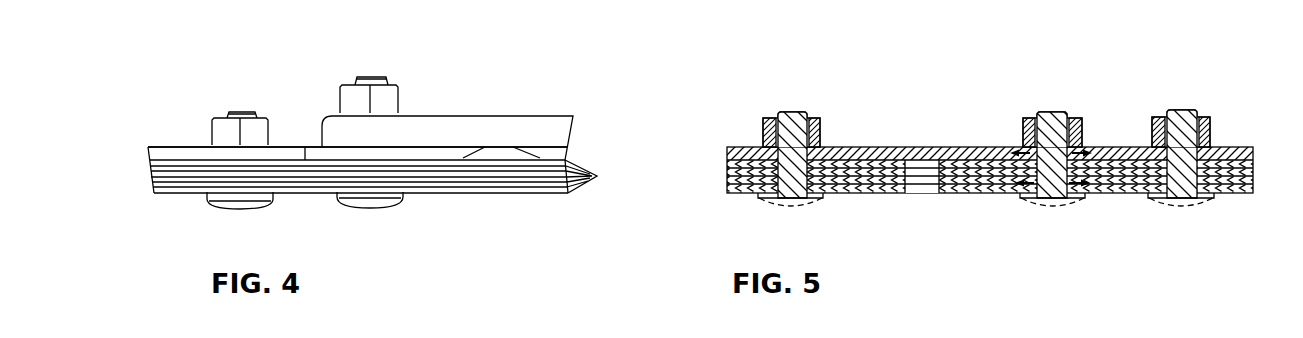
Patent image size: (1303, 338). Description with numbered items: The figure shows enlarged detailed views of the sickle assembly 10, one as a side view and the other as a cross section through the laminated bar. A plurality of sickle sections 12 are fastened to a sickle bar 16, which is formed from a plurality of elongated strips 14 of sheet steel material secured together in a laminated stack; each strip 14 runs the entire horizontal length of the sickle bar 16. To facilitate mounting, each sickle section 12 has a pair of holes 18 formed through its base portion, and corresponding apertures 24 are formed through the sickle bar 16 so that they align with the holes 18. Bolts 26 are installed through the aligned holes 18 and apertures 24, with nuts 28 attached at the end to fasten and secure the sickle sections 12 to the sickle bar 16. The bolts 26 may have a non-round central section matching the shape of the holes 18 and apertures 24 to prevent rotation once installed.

In FIG. 4, the fastening assembly 10 is at (572, 51).
In FIG. 4, the sickle section 12 is at (187, 152).
In FIG. 5, the sickle section 12 is at (927, 150).
In FIG. 4, the elongated strip 14 is at (599, 176).
In FIG. 4, the sickle bar 16 is at (146, 161).
In FIG. 5, the hole 18 is at (1002, 152).
In FIG. 5, the aperture 24 is at (1007, 185).
In FIG. 4, the bolt 26 is at (375, 202).
In FIG. 5, the bolt 26 is at (1178, 199).
In FIG. 4, the nut 28 is at (350, 93).
In FIG. 5, the nut 28 is at (1153, 140).